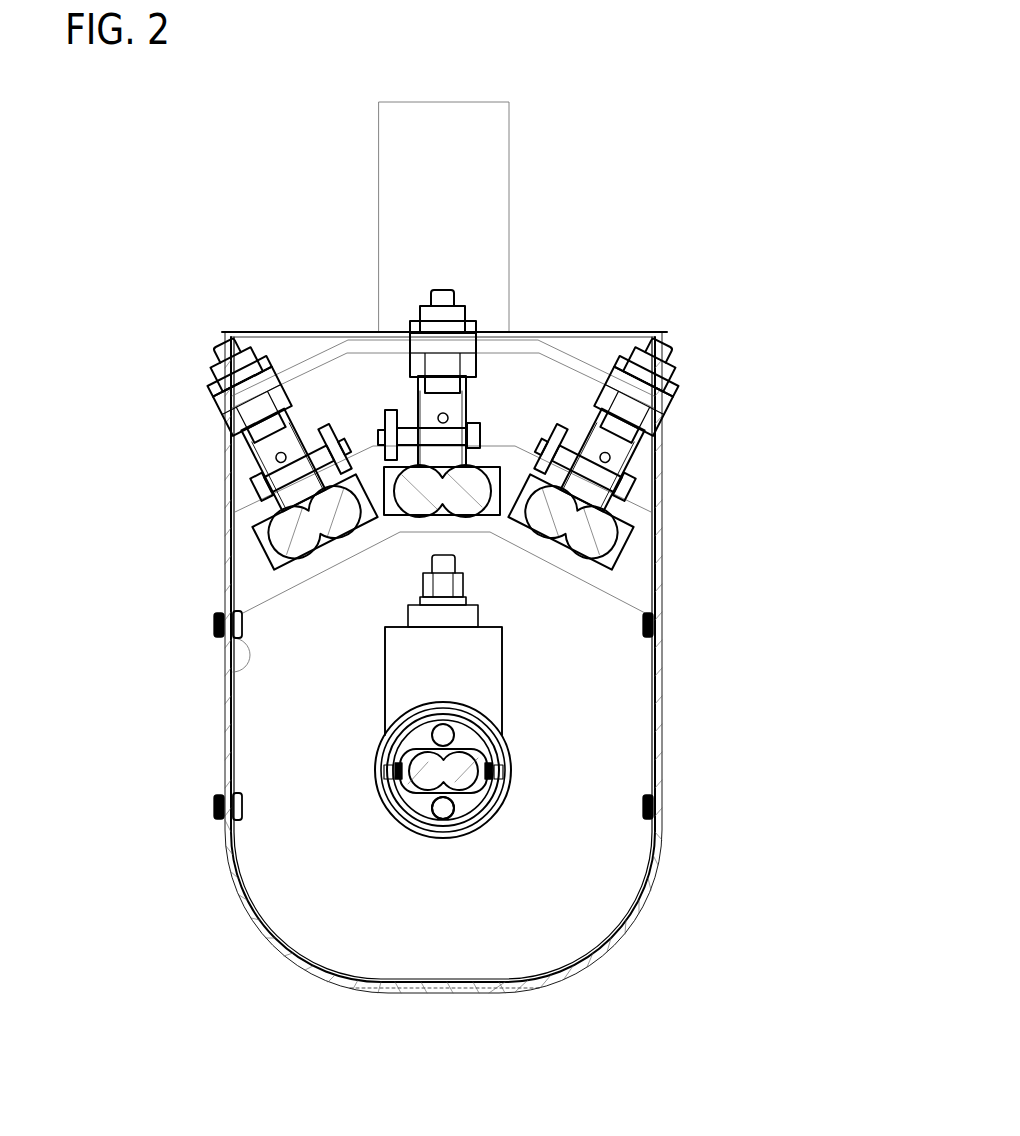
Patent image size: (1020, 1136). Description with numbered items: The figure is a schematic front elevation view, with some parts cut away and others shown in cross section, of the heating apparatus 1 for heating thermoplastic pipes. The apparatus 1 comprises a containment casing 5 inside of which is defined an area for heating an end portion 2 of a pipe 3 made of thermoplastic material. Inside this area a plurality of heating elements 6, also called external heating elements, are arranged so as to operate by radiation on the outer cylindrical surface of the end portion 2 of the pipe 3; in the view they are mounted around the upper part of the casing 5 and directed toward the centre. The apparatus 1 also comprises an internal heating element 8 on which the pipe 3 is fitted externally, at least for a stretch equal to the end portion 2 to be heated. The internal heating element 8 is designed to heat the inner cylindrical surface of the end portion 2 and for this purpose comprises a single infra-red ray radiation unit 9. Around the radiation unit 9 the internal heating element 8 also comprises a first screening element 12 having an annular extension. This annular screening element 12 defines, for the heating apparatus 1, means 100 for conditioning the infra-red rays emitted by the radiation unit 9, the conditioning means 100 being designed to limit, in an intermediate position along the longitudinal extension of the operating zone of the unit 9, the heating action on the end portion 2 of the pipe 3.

The heating apparatus 1 is at (193, 272).
The containment casing 5 is at (222, 704).
The heating elements 6 is at (347, 543).
The end portion 2 is at (367, 773).
The pipe 3 is at (443, 681).
The infra-red ray radiation unit 9 is at (468, 770).
The internal heating element 8 is at (460, 802).
The conditioning means 100 is at (432, 818).
The first screening element 12 is at (443, 808).